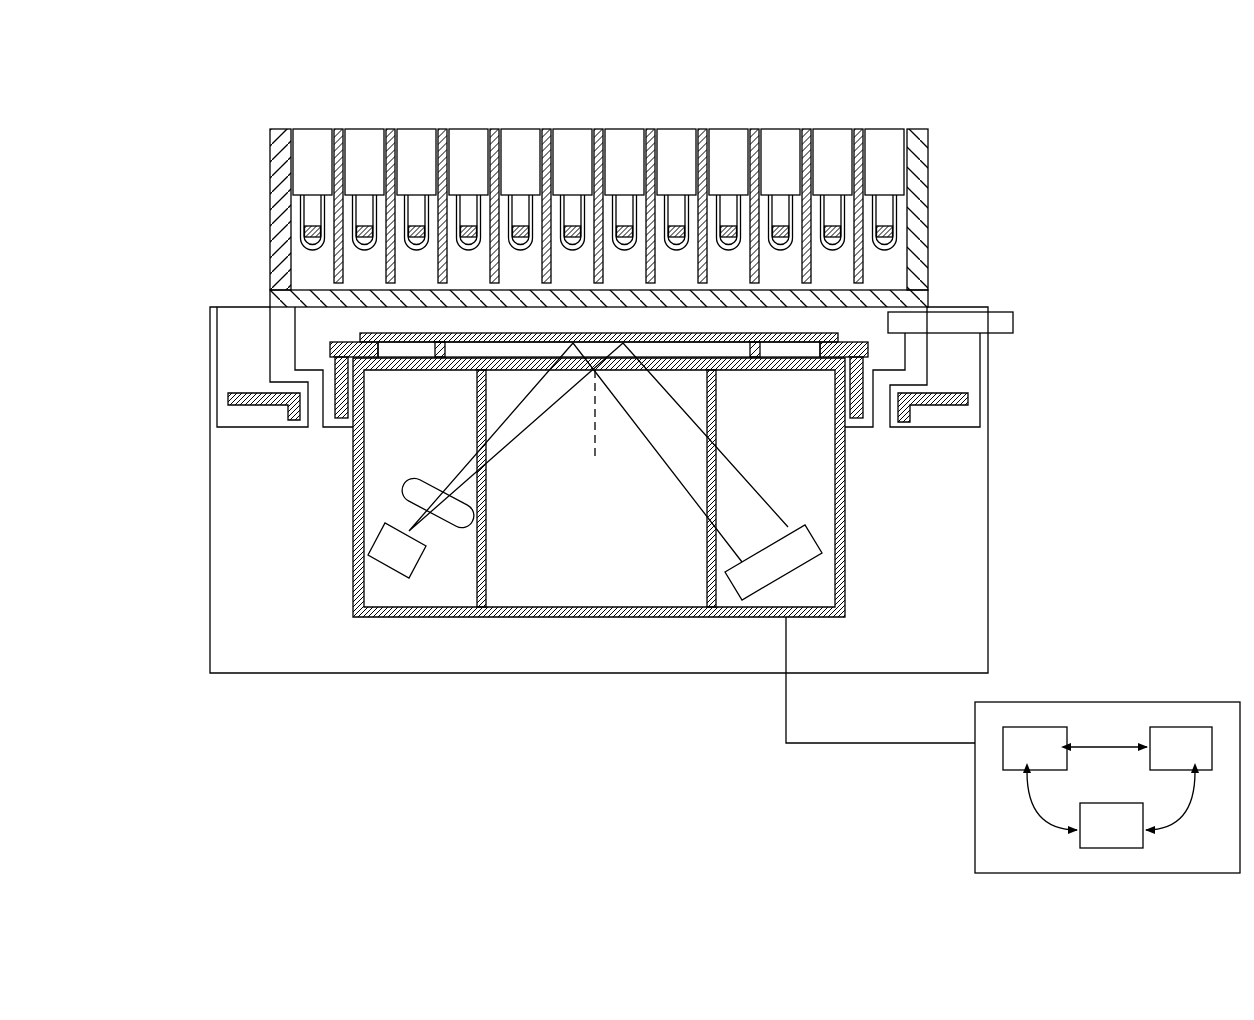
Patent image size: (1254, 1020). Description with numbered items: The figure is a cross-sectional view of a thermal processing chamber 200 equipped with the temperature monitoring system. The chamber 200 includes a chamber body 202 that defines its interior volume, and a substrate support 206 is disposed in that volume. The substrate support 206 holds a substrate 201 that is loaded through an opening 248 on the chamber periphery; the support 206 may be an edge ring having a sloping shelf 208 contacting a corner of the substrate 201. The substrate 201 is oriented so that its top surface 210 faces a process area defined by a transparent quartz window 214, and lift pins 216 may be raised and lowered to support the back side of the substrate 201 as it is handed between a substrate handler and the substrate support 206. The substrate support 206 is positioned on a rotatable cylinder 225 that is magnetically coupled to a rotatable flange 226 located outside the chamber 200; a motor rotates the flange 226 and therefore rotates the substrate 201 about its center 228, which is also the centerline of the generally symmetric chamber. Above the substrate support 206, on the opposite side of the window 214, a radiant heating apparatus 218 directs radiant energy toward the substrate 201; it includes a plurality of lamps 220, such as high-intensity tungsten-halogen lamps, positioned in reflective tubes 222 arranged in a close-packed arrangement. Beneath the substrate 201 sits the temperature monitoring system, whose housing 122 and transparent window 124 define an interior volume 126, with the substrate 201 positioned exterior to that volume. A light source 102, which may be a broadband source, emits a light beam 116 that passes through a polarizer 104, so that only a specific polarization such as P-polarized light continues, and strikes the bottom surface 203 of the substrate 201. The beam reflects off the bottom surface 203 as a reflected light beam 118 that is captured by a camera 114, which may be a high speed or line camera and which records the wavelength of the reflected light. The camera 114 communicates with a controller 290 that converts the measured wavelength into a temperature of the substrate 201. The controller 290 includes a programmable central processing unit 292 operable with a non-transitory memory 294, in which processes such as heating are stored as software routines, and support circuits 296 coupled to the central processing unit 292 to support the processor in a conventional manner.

The thermal processing chamber 200 is at (1060, 113).
The chamber body 202 is at (990, 474).
The radiant heating apparatus 218 is at (216, 177).
The lamp 220 is at (303, 248).
The reflective tube 222 is at (336, 258).
The transparent quartz window 214 is at (878, 290).
The opening 248 is at (1012, 311).
The sloping shelf 208 is at (360, 333).
The substrate 201 is at (455, 335).
The substrate support 206 is at (332, 352).
The top surface 210 is at (573, 340).
The lift pins 216 is at (447, 343).
The rotatable flange 226 is at (238, 393).
The rotatable cylinder 225 is at (340, 407).
The housing 122 is at (846, 502).
The transparent window 124 is at (497, 372).
The bottom surface 203 is at (720, 373).
The interior volume 126 is at (617, 542).
The center 228 is at (595, 437).
The light beam 116 is at (505, 447).
The reflected light beam 118 is at (730, 460).
The light source 102 is at (420, 560).
The polarizer 104 is at (415, 480).
The camera 114 is at (807, 527).
The controller 290 is at (1155, 702).
The central processing unit 292 is at (1055, 761).
The memory 294 is at (1201, 761).
The support circuits 296 is at (1132, 838).